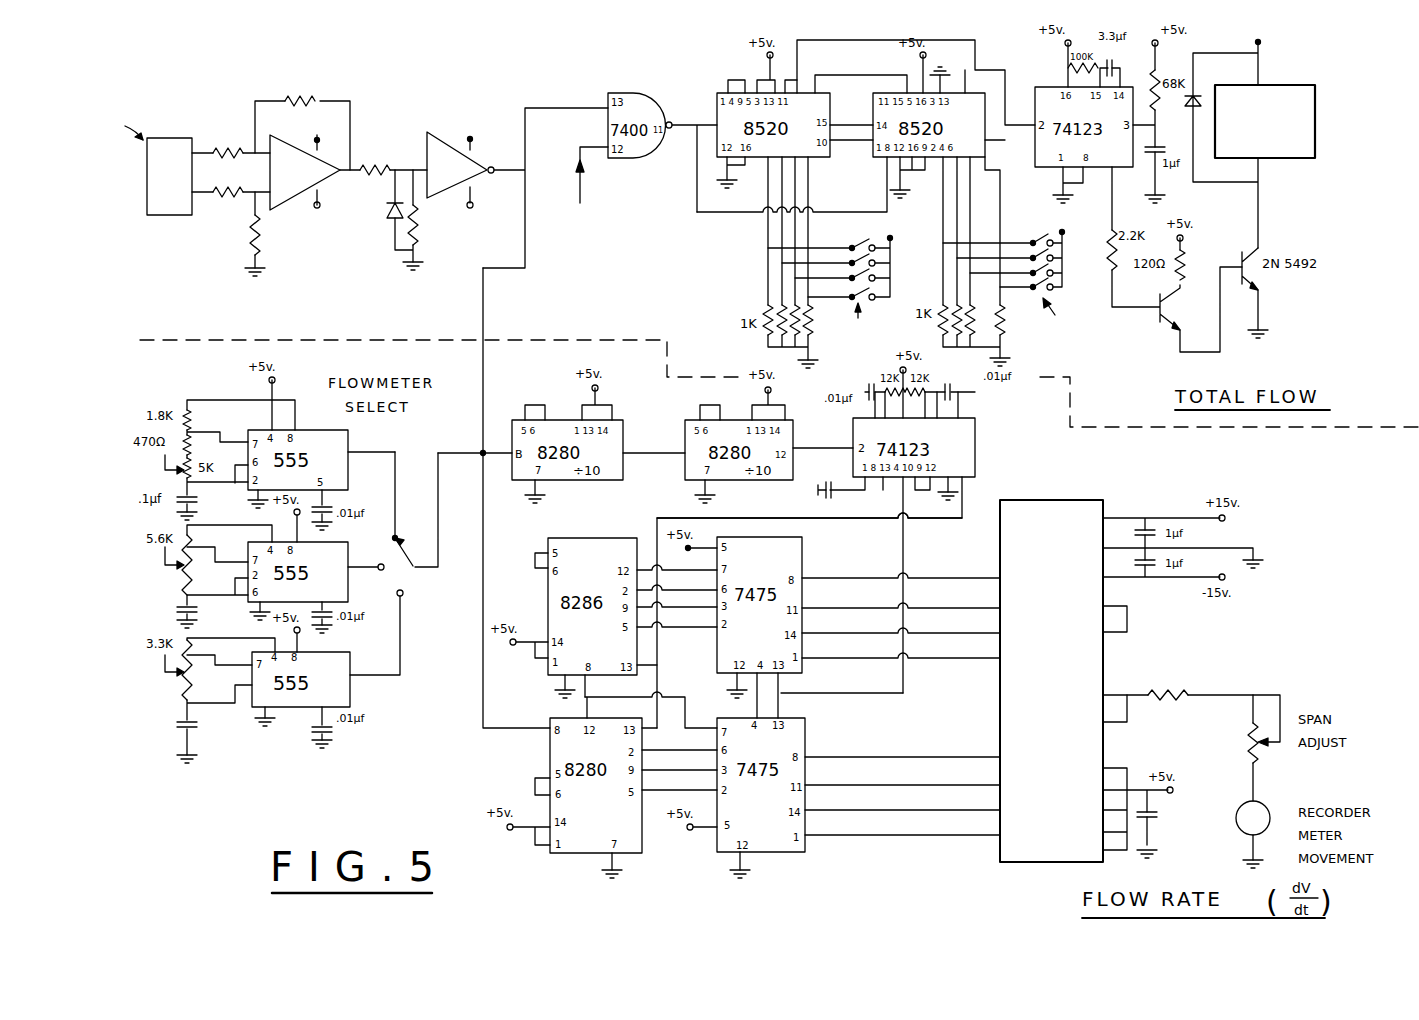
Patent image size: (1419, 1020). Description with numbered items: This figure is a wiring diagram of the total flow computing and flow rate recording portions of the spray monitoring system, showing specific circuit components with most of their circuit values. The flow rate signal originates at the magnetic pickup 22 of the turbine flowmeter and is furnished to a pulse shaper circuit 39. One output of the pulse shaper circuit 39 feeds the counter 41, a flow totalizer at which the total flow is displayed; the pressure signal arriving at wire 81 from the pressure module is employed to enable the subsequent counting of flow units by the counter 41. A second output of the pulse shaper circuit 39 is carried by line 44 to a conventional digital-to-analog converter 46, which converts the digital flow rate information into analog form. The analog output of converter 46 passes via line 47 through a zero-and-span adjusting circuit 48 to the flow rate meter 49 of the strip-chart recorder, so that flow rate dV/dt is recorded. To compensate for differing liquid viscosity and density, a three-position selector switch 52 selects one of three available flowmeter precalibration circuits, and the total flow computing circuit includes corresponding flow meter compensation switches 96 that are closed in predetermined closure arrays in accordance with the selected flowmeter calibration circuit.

The magnetic pickup 22 is at (170, 216).
The pulse shaper circuit 39 is at (388, 110).
The counter 41 is at (1283, 83).
The line 44 is at (483, 313).
The digital-to-analog converter 46 is at (1033, 500).
The line 47 is at (1234, 695).
The zero-and-span adjusting circuit 48 is at (1245, 722).
The flow rate meter 49 is at (1238, 813).
The 3-position selector switch 52 is at (405, 585).
The wire 81 is at (583, 193).
The flow meter compensation switches 96 is at (850, 244).